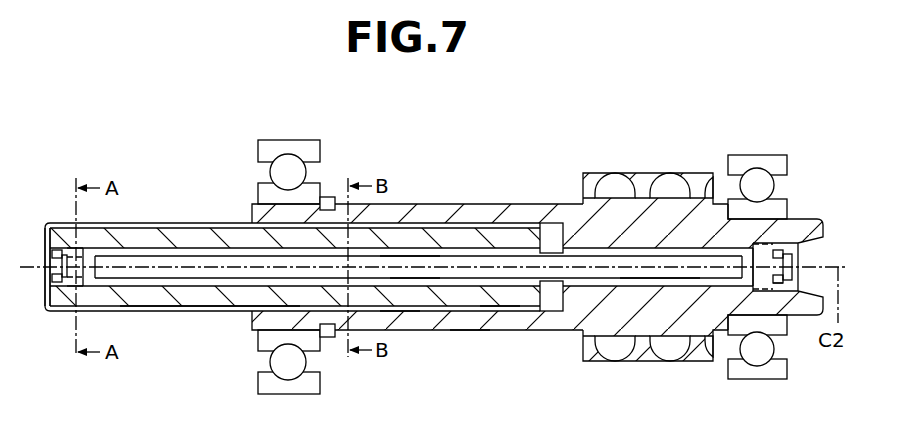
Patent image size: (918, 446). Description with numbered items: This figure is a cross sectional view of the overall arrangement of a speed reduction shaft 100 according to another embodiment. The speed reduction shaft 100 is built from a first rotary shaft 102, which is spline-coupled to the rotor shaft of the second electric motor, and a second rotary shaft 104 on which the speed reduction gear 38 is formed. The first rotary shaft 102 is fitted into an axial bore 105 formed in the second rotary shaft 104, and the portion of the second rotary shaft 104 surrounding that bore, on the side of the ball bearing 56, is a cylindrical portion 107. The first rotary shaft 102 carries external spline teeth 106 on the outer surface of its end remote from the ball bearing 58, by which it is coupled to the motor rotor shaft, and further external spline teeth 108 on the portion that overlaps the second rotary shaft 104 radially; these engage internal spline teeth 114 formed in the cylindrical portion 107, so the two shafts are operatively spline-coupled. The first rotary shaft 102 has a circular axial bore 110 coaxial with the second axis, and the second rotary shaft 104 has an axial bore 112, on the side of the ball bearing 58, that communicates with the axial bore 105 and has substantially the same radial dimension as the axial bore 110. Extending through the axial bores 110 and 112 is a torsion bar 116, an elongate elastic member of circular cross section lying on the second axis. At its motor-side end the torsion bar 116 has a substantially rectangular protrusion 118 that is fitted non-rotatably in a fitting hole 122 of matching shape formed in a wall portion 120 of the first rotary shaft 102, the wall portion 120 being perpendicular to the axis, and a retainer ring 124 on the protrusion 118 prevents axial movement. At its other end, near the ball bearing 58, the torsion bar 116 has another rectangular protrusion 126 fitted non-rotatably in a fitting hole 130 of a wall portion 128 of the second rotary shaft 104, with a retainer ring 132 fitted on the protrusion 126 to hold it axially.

The speed reduction shaft 100 is at (447, 124).
The first rotary shaft 102 is at (194, 221).
The second rotary shaft 104 is at (479, 194).
The axial bore 105 is at (503, 300).
The external spline teeth 106 is at (193, 312).
The cylindrical portion 107 is at (467, 320).
The external spline teeth 108 is at (447, 222).
The axial bore 110 is at (414, 280).
The axial bore 112 is at (659, 278).
The internal spline teeth 114 is at (400, 313).
The torsion bar 116 is at (408, 262).
The protrusion 118 is at (49, 262).
The wall portion 120 is at (71, 279).
The fitting hole 122 is at (82, 277).
The retainer ring 124 is at (81, 261).
The protrusion 126 is at (794, 259).
The wall portion 128 is at (762, 256).
The fitting hole 130 is at (751, 269).
The retainer ring 132 is at (781, 284).
The speed reduction gear 38 is at (615, 182).
The ball bearing 56 is at (288, 167).
The ball bearing 58 is at (754, 181).